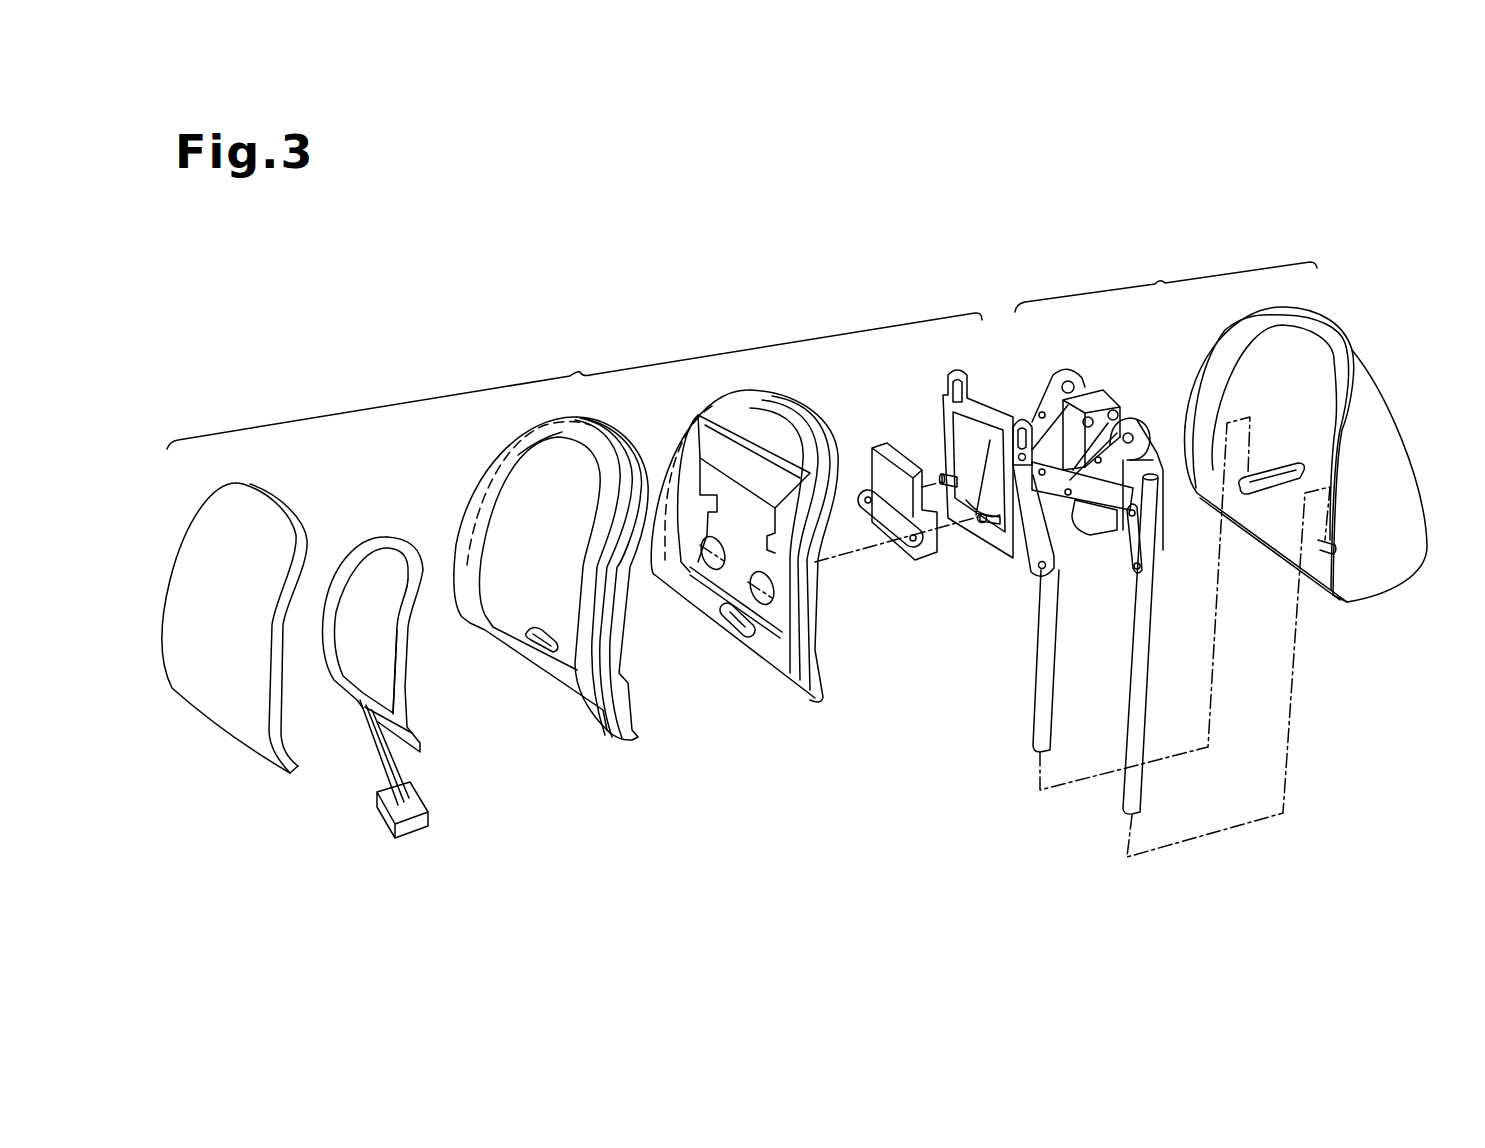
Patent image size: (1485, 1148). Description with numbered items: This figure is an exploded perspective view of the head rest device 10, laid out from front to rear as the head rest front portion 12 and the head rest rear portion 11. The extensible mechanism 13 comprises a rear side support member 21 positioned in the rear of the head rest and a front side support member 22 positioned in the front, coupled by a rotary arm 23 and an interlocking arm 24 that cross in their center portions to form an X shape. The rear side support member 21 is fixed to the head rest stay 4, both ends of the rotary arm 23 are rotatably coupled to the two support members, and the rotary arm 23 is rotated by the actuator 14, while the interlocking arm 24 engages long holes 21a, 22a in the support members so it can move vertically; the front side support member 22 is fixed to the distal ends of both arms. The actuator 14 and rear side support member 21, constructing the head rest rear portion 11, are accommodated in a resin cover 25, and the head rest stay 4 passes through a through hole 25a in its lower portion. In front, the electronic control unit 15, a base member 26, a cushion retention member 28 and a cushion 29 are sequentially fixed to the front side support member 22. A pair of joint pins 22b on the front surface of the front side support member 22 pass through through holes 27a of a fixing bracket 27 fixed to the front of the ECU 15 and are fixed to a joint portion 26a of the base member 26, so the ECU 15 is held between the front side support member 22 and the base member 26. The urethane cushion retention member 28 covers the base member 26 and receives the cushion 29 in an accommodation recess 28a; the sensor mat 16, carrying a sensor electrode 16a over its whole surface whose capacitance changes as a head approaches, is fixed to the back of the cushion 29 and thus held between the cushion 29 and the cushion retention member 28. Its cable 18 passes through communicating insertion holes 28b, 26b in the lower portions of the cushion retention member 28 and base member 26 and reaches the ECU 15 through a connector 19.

The head rest device 10 is at (986, 238).
The head rest rear portion 11 is at (1166, 281).
The head rest front portion 12 is at (574, 381).
The extensible mechanism 13 is at (1045, 364).
The actuator 14 is at (1105, 400).
The electronic control unit 15 is at (872, 452).
The sensor mat 16 is at (406, 621).
The sensor electrode 16a is at (383, 645).
The cable 18 is at (397, 768).
The connector 19 is at (430, 818).
The rear side support member 21 is at (1142, 458).
The long hole 21a is at (1133, 585).
The front side support member 22 is at (968, 480).
The long hole 22a is at (1020, 430).
The joint pin 22b is at (940, 476).
The rotary arm 23 is at (1128, 430).
The interlocking arm 24 is at (1110, 535).
The cover 25 is at (1315, 478).
The through hole 25a is at (1278, 478).
The base member 26 is at (744, 531).
The joint portion 26a is at (712, 570).
The insertion hole 26b is at (735, 625).
The fixing bracket 27 is at (896, 550).
The through hole 27a is at (912, 545).
The cushion retention member 28 is at (547, 570).
The accommodation recess 28a is at (528, 483).
The insertion hole 28b is at (530, 660).
The cushion 29 is at (275, 496).
The head rest stay 4 is at (1052, 670).